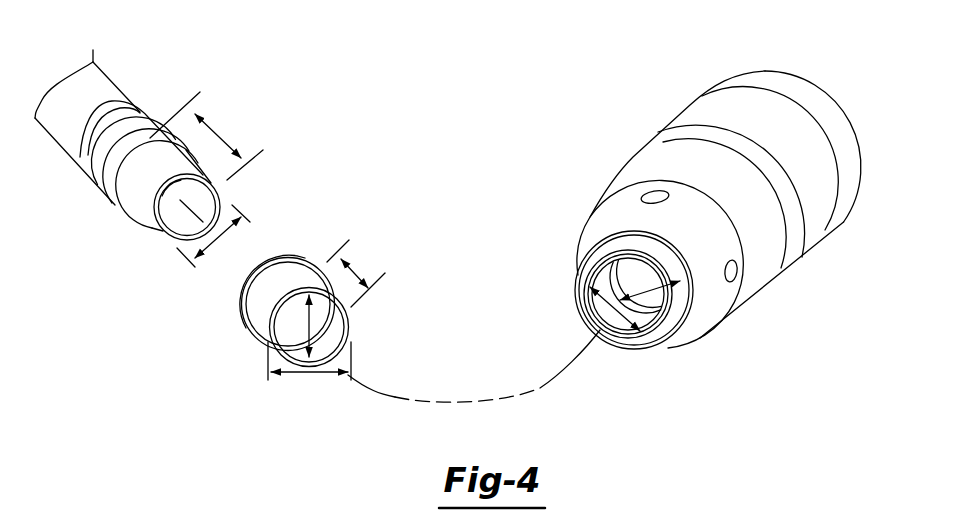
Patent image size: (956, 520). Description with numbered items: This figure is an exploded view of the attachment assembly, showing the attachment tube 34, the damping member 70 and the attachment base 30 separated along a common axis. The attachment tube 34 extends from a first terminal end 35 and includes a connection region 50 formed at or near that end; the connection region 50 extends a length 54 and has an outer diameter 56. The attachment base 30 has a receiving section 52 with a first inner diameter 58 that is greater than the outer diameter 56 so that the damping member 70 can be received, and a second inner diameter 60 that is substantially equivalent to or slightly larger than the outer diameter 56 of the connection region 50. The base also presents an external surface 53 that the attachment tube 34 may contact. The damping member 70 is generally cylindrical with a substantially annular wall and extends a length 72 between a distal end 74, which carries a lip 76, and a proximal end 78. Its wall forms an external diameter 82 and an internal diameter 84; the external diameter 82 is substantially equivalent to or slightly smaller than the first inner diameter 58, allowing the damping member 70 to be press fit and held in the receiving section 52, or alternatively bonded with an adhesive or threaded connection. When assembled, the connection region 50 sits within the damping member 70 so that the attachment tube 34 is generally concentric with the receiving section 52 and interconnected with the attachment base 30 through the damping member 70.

The attachment base 30 is at (688, 254).
The attachment tube 34 is at (121, 87).
The first terminal end 35 is at (177, 243).
The connection region 50 is at (127, 230).
The receiving section 52 is at (603, 342).
The external surface 53 is at (630, 349).
The length 54 is at (222, 133).
The outer diameter 56 is at (222, 246).
The first inner diameter 58 is at (612, 311).
The second inner diameter 60 is at (621, 302).
The damping member 70 is at (306, 314).
The length 72 is at (357, 272).
The distal end 74 is at (288, 257).
The lip 76 is at (243, 320).
The proximal end 78 is at (350, 325).
The external diameter 82 is at (308, 377).
The internal diameter 84 is at (278, 338).